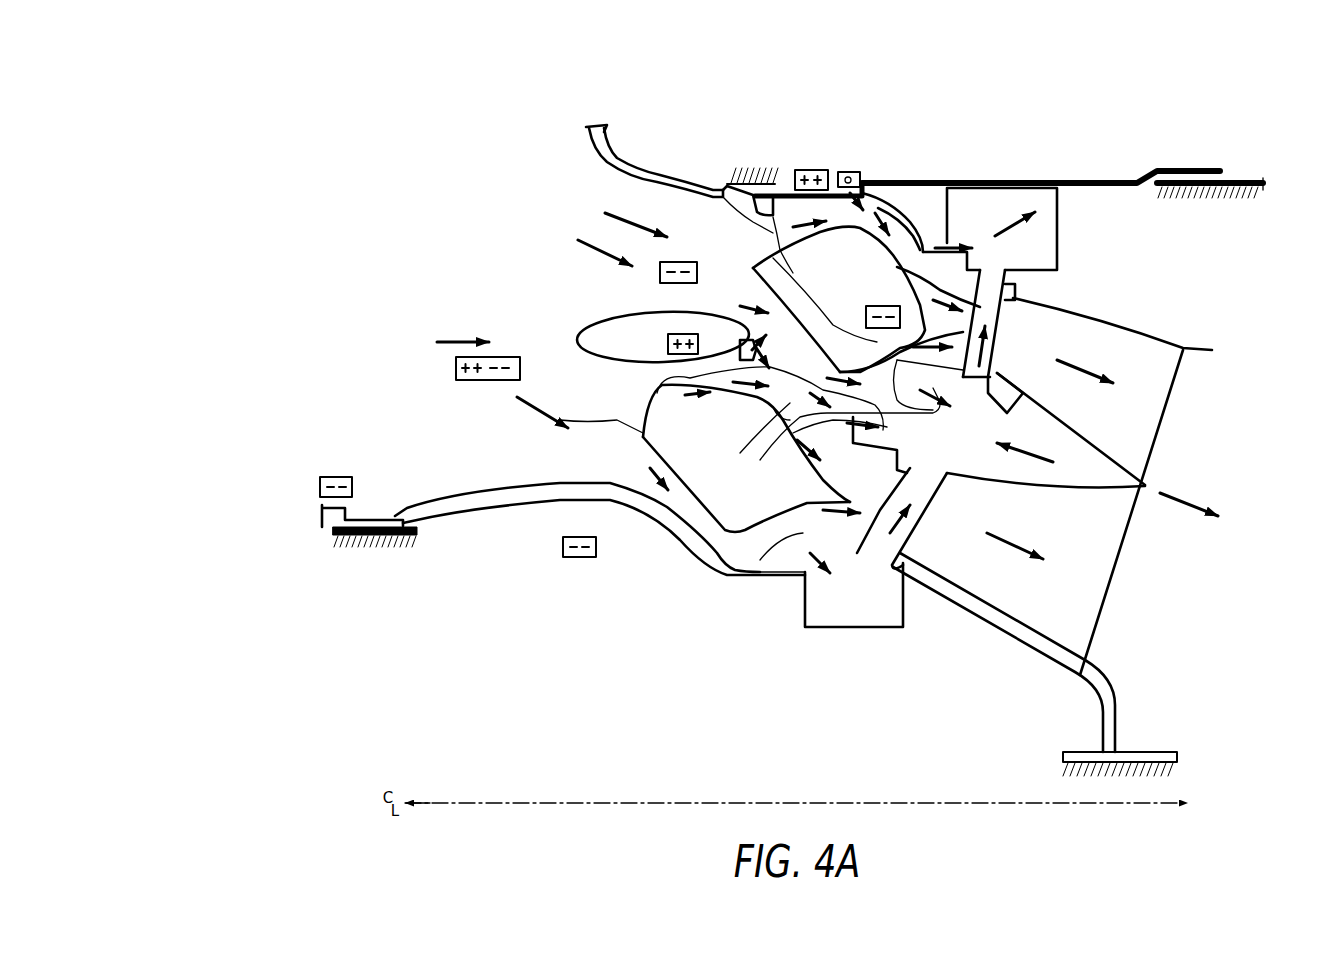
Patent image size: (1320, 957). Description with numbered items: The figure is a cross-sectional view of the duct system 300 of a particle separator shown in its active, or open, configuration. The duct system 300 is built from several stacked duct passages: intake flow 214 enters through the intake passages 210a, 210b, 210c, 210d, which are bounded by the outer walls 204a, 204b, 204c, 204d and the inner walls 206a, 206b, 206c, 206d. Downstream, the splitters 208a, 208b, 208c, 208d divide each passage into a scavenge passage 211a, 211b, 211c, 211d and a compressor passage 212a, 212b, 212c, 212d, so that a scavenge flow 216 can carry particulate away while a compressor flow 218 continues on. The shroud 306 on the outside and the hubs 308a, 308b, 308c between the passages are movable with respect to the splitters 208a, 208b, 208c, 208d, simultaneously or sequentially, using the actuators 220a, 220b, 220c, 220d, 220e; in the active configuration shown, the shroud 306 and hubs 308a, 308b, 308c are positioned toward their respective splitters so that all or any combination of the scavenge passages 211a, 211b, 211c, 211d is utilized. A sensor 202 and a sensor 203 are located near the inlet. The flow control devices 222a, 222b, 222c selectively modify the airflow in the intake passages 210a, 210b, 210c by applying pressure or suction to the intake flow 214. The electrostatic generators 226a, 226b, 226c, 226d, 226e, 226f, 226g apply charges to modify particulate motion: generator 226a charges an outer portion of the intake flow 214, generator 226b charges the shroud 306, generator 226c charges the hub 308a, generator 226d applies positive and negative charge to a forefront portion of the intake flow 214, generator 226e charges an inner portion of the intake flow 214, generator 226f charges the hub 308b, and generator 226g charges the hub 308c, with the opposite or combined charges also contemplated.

The duct system 300 is at (1131, 93).
The sensor 202 is at (863, 180).
The sensor 203 is at (842, 172).
The outer wall 204a is at (727, 187).
The outer wall 204b is at (790, 300).
The outer wall 204c is at (657, 385).
The outer wall 204d is at (700, 465).
The inner wall 206a is at (752, 268).
The inner wall 206b is at (620, 313).
The inner wall 206c is at (560, 420).
The inner wall 206d is at (437, 497).
The splitter 208a is at (918, 320).
The splitter 208b is at (833, 500).
The splitter 208c is at (990, 375).
The splitter 208d is at (840, 530).
The intake passage 210a is at (700, 192).
The intake passage 210b is at (757, 310).
The intake passage 210c is at (657, 393).
The intake passage 210d is at (673, 500).
The scavenge passage 211a is at (912, 235).
The scavenge passage 211b is at (867, 377).
The scavenge passage 211c is at (800, 410).
The scavenge passage 211d is at (810, 548).
The compressor passage 212a is at (880, 210).
The compressor passage 212b is at (773, 233).
The compressor passage 212c is at (730, 470).
The compressor passage 212d is at (850, 480).
The intake flow 214 is at (453, 343).
The scavenge flow 216 is at (1007, 220).
The compressor flow 218 is at (1190, 493).
The actuator 220a is at (1015, 300).
The actuator 220b is at (1186, 180).
The actuator 220c is at (767, 186).
The actuator 220d is at (405, 537).
The actuator 220e is at (1123, 747).
The flow control device 222a is at (846, 170).
The flow control device 222b is at (740, 358).
The flow control device 222c is at (827, 413).
The electrostatic generator 226a is at (640, 246).
The electrostatic generator 226b is at (810, 167).
The electrostatic generator 226c is at (900, 315).
The electrostatic generator 226d is at (460, 368).
The electrostatic generator 226e is at (320, 484).
The electrostatic generator 226f is at (668, 344).
The electrostatic generator 226g is at (563, 547).
The shroud 306 is at (1063, 173).
The hub 308a is at (828, 283).
The hub 308b is at (618, 348).
The hub 308c is at (690, 446).